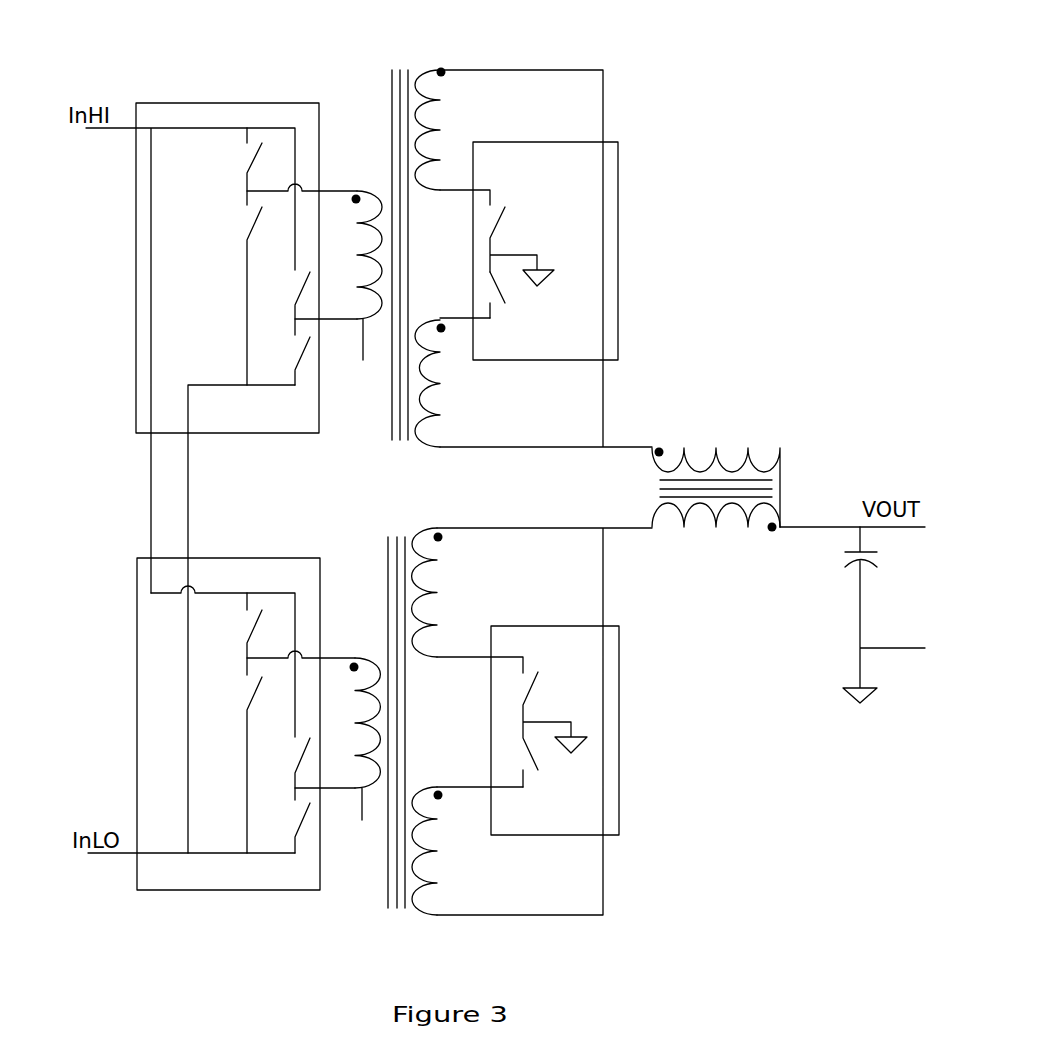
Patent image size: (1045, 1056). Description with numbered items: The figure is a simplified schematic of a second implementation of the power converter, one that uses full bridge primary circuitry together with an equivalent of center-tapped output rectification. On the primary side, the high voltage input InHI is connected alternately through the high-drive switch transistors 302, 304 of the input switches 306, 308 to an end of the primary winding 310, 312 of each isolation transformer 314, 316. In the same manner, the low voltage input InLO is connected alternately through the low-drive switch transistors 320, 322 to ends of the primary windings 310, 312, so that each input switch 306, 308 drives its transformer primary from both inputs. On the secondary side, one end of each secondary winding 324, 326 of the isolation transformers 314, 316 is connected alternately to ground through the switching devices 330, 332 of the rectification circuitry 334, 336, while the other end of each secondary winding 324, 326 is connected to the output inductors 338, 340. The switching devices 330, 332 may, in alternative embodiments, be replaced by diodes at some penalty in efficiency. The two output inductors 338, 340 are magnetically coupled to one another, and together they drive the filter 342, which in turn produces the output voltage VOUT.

The high-drive switch transistor 302 is at (246, 159).
The high-drive switch transistor 304 is at (293, 288).
The input switch 306 is at (177, 110).
The input switch 308 is at (217, 560).
The primary winding 310 is at (355, 292).
The primary winding 312 is at (357, 754).
The isolation transformer 314 is at (402, 63).
The isolation transformer 316 is at (392, 917).
The low-drive switch transistor 320 is at (246, 234).
The low-drive switch transistor 322 is at (293, 353).
The secondary winding 324 is at (440, 127).
The secondary winding 326 is at (440, 415).
The switching device 330 is at (505, 222).
The switching device 332 is at (505, 287).
The rectification circuitry 334 is at (619, 238).
The rectification circuitry 336 is at (619, 743).
The output inductor 338 is at (715, 448).
The output inductor 340 is at (683, 523).
The filter 342 is at (843, 560).